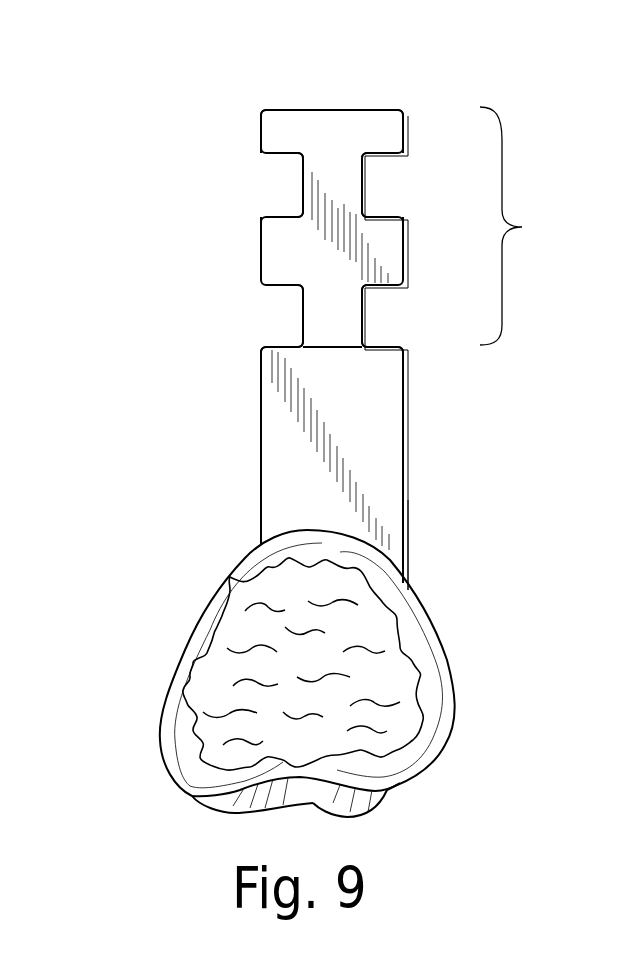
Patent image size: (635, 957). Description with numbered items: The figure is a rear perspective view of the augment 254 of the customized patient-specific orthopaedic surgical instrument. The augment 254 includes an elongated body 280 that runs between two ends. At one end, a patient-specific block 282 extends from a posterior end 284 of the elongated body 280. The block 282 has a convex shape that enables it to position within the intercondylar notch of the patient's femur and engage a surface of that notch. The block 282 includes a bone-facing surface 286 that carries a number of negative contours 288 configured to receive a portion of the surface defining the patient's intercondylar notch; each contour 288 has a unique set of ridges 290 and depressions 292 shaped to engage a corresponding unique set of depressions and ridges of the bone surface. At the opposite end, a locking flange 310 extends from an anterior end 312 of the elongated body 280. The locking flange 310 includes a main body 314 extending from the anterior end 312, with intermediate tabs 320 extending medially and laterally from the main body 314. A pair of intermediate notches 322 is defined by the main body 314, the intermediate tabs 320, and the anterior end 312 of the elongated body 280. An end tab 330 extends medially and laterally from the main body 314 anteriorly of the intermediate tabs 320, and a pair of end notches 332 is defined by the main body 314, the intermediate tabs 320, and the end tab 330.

The augment 254 is at (373, 82).
The elongated body 280 is at (388, 388).
The patient-specific block 282 is at (425, 765).
The posterior end 284 is at (403, 555).
The bone-facing surface 286 is at (195, 797).
The negative contour 288 is at (293, 750).
The ridges 290 is at (200, 627).
The depressions 292 is at (243, 583).
The locking flange 310 is at (522, 227).
The anterior end 312 is at (392, 342).
The main body 314 is at (301, 178).
The intermediate tabs 320 is at (262, 258).
The intermediate notches 322 is at (278, 323).
The end tab 330 is at (285, 117).
The end notches 332 is at (278, 198).